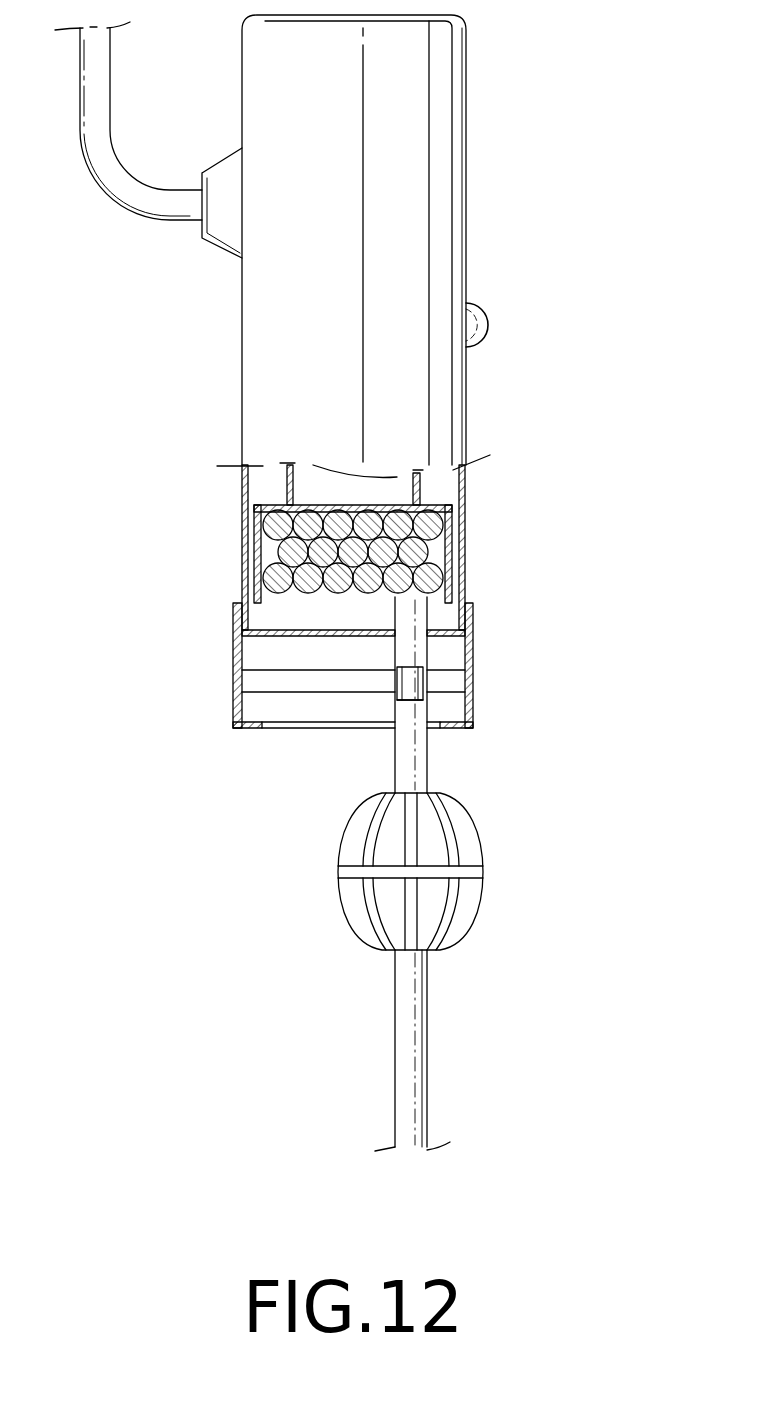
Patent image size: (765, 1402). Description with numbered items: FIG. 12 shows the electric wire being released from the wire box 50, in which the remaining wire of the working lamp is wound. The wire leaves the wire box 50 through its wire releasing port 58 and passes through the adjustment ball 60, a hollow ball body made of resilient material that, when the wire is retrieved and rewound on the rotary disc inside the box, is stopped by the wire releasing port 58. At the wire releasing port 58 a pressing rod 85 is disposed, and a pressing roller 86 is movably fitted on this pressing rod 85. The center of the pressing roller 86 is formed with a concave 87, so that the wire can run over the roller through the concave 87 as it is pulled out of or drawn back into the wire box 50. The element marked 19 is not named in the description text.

The wire box 50 is at (433, 153).
The bead chain 19 is at (432, 522).
The wire releasing port 58 is at (297, 727).
The pressing rod 85 is at (445, 678).
The pressing roller 86 is at (397, 683).
The concave 87 is at (408, 700).
The adjustment ball 60 is at (467, 842).